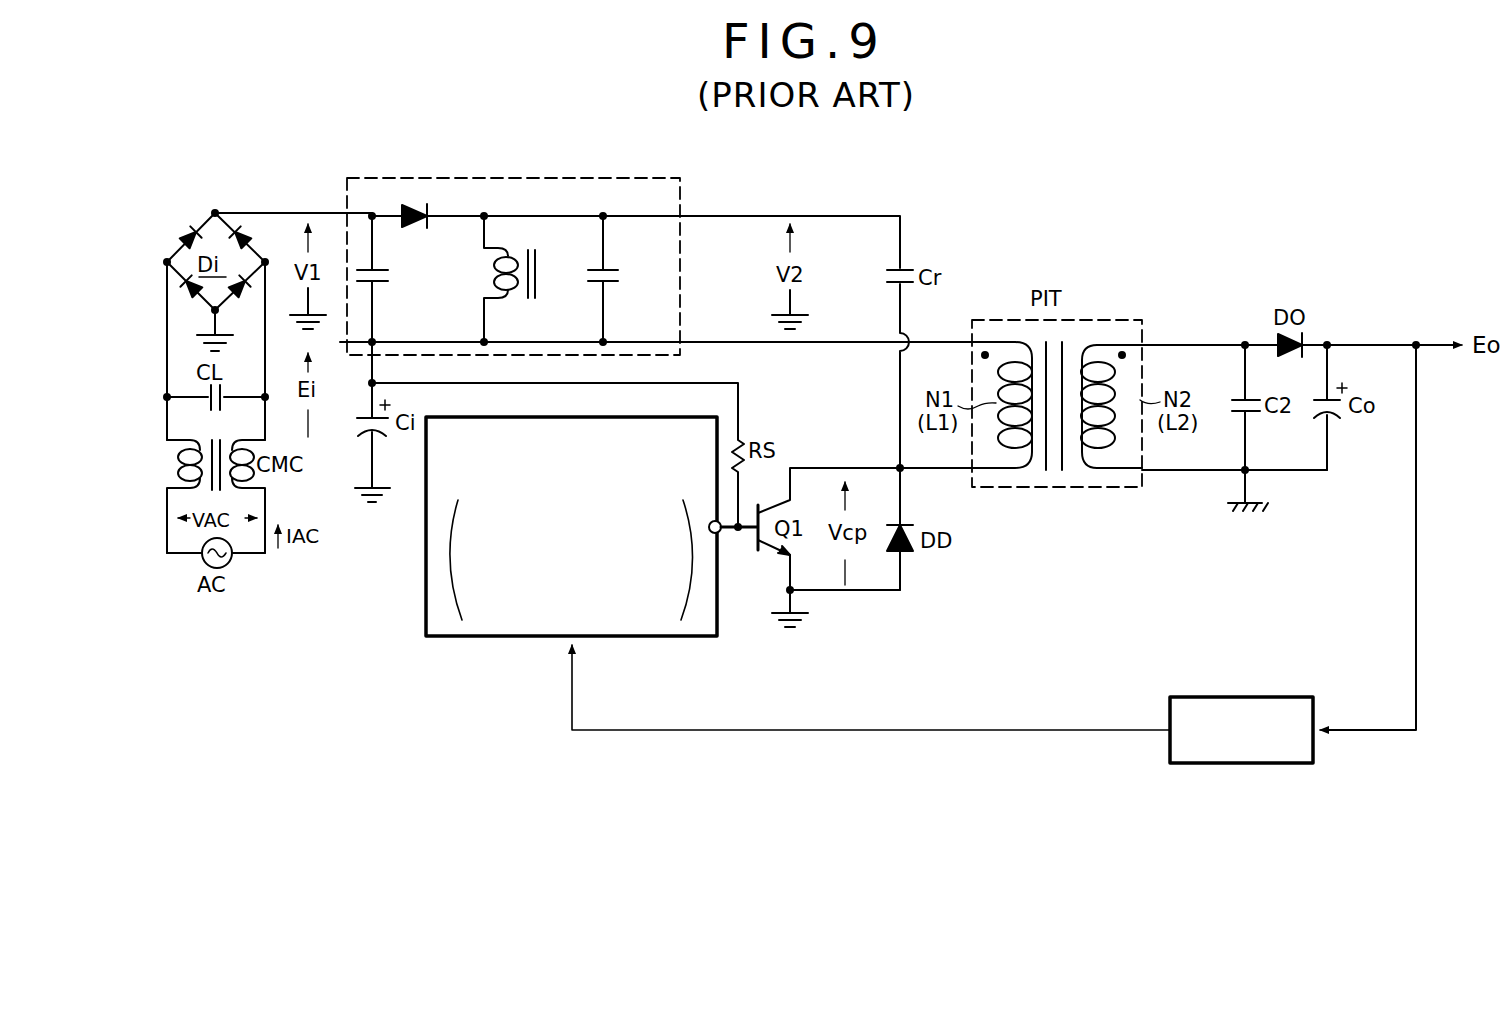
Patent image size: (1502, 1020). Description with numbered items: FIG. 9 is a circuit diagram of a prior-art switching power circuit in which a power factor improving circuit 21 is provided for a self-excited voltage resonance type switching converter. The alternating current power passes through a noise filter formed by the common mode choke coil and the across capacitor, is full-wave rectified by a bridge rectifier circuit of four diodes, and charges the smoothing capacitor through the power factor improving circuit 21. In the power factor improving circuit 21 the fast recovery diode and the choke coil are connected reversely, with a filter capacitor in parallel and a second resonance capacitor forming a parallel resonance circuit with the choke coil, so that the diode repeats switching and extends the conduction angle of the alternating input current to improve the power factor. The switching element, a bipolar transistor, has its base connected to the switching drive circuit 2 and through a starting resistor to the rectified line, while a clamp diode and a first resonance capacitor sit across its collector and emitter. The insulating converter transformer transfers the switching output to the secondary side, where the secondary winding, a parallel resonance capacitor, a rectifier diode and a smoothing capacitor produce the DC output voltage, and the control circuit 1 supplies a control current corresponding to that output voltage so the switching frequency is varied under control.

The power factor improving circuit 21 is at (503, 176).
The switching drive circuit 2 is at (626, 637).
The control circuit 1 is at (1245, 697).